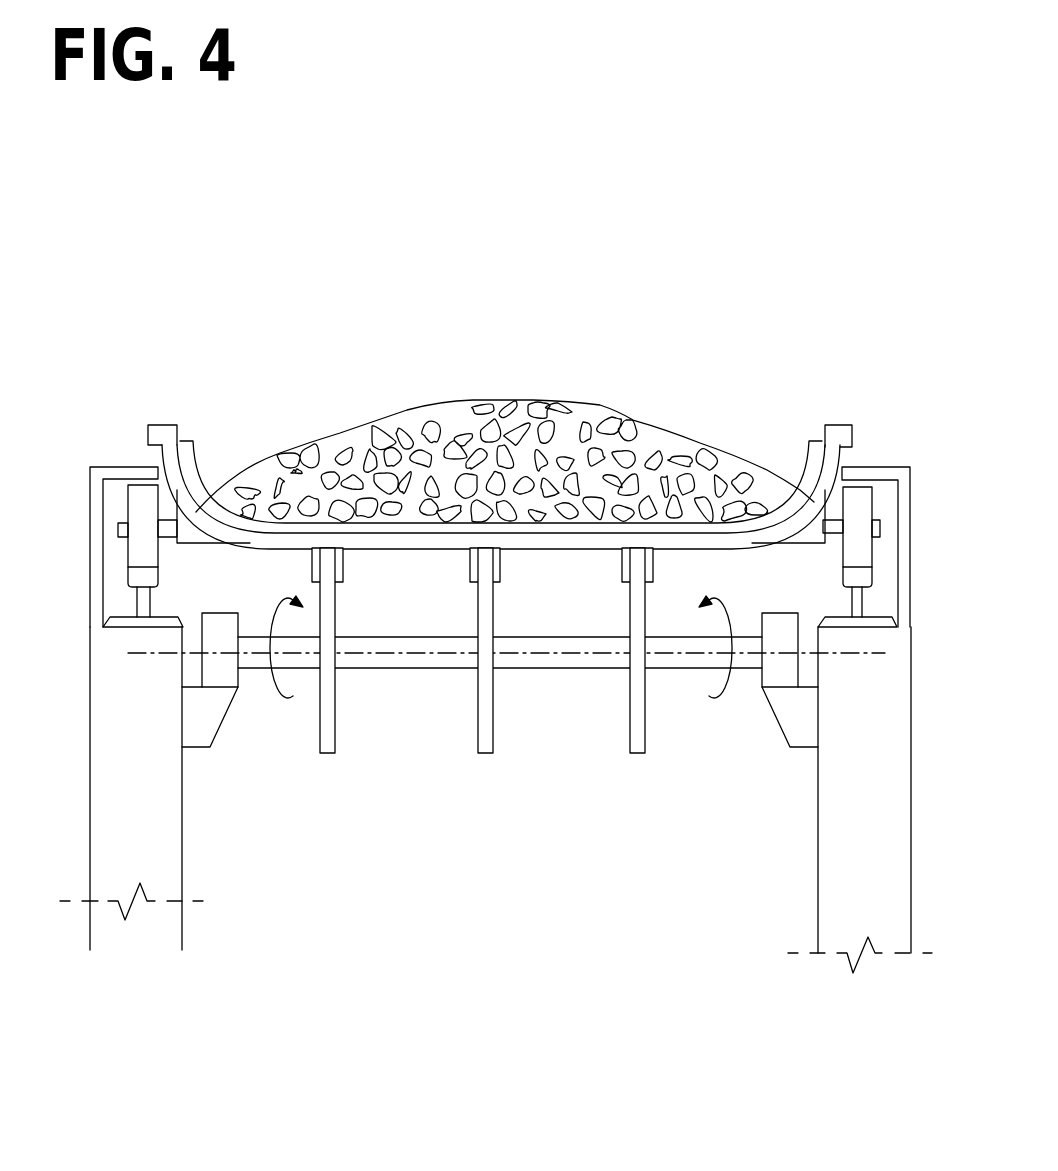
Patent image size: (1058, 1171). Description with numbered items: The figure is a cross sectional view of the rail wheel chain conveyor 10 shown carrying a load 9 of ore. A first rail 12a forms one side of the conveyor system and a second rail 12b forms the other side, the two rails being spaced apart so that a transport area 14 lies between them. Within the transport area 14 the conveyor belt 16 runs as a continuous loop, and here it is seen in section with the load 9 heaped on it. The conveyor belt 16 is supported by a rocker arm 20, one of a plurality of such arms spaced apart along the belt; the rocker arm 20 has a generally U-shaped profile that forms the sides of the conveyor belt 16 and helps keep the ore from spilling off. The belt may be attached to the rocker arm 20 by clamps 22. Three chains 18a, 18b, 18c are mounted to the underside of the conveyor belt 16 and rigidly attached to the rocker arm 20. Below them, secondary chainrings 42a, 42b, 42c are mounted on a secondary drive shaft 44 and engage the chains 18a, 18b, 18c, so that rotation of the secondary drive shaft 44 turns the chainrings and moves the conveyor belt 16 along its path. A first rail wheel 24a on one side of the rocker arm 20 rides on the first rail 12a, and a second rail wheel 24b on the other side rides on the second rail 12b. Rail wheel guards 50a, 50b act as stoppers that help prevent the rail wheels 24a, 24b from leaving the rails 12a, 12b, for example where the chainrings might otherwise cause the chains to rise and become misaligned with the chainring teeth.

The load 9 is at (637, 404).
The rail wheel chain conveyor 10 is at (842, 276).
The first rail 12a is at (152, 590).
The second rail 12b is at (867, 590).
The transport area 14 is at (462, 350).
The conveyor belt 16 is at (325, 520).
The chain 18a is at (343, 585).
The chain 18b is at (500, 585).
The chain 18c is at (627, 582).
The rocker arm 20 is at (180, 423).
The clamp 22 is at (205, 467).
The first rail wheel 24a is at (160, 545).
The second rail wheel 24b is at (843, 545).
The secondary chainring 42a is at (337, 755).
The secondary chainring 42b is at (495, 755).
The secondary chainring 42c is at (647, 737).
The secondary drive shaft 44 is at (540, 670).
The rail wheel guard 50a is at (112, 465).
The rail wheel guard 50b is at (878, 463).